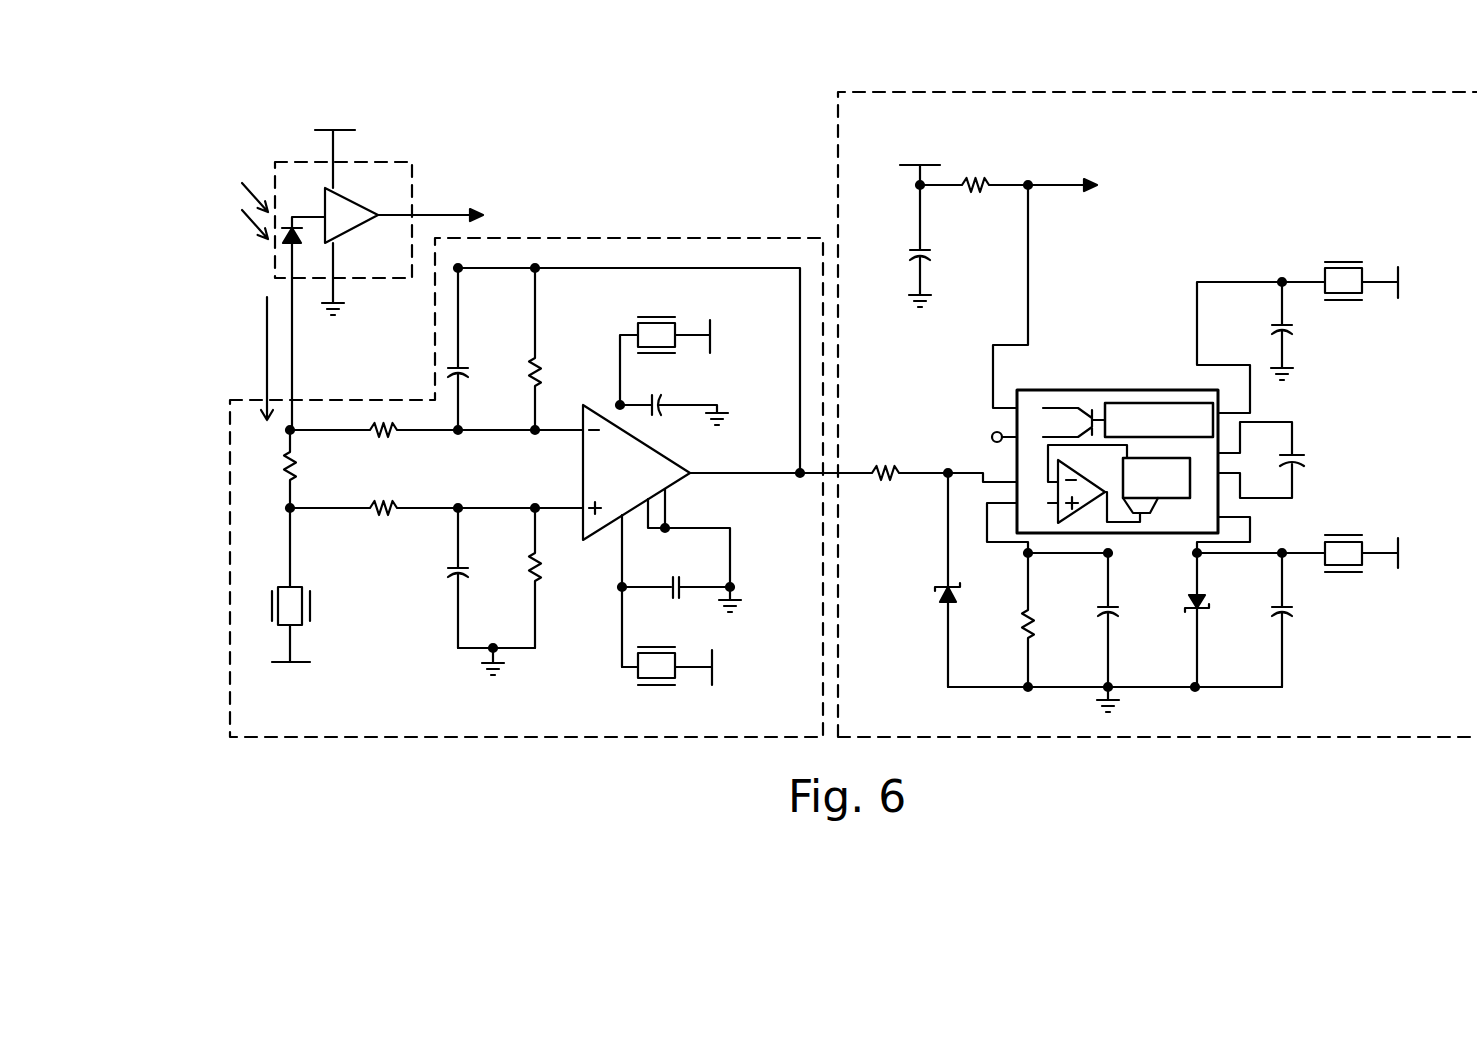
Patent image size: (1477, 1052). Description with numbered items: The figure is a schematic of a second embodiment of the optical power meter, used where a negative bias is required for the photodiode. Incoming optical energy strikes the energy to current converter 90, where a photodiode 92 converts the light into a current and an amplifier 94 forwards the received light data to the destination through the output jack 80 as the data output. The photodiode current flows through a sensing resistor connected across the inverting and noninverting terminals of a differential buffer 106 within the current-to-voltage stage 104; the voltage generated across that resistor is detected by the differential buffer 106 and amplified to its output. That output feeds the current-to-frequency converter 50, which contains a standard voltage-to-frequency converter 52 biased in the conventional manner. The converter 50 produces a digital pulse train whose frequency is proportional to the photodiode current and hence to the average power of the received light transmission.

The current-to-frequency converter 50 is at (1150, 386).
The voltage-to-frequency converter 52 is at (1103, 390).
The output jack 80 is at (476, 208).
The energy to current converter 90 is at (275, 264).
The photodiode 92 is at (283, 241).
The amplifier 94 is at (372, 220).
The amplifier stage 104 is at (526, 451).
The differential buffer 106 is at (655, 446).